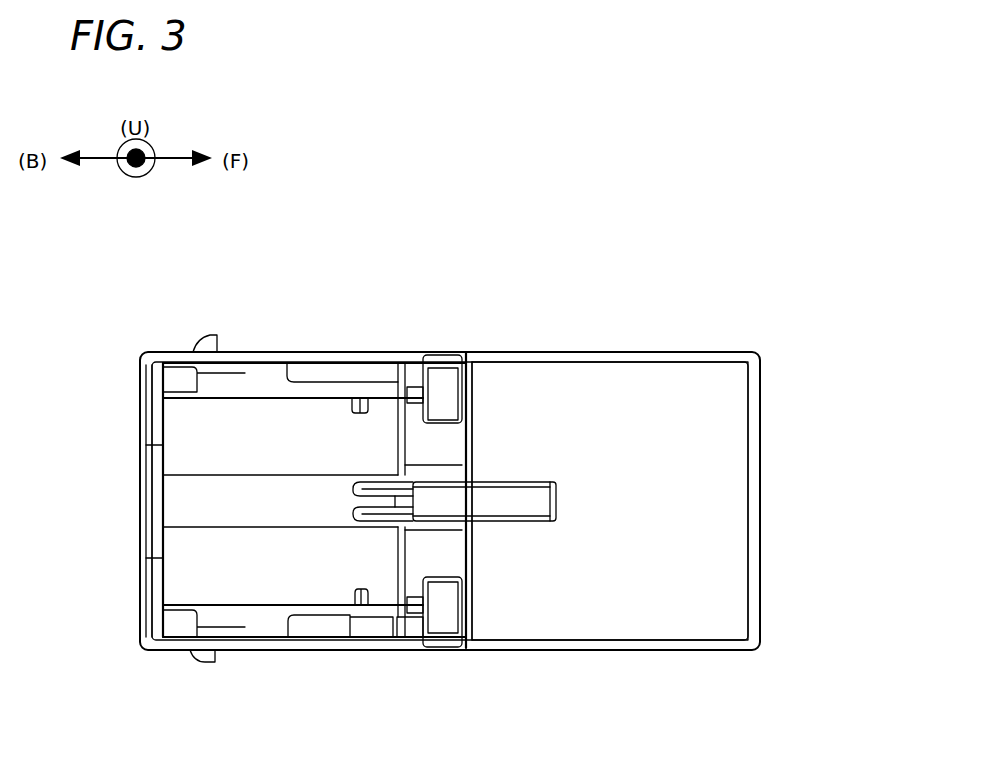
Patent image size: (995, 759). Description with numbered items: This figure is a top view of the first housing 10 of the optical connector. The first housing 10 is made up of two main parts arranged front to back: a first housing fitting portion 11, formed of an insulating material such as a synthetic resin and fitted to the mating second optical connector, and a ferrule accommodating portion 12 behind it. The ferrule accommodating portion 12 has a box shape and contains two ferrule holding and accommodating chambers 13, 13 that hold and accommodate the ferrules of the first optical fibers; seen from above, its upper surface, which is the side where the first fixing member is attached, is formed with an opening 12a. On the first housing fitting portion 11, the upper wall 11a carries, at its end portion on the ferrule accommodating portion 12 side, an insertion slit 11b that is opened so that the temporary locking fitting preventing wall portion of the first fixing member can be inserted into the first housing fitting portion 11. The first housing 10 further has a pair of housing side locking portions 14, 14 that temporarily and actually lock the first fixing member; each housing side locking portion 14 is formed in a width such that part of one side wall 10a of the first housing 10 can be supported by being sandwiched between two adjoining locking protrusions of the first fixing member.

The first housing 10 is at (412, 306).
The side wall 10a is at (365, 352).
The first housing fitting portion 11 is at (611, 453).
The upper wall 11a is at (690, 530).
The insertion slit 11b is at (550, 477).
The ferrule accommodating portion 12 is at (276, 444).
The opening 12a is at (192, 367).
The ferrule holding and accommodating chamber 13 is at (228, 432).
The housing side locking portion 14 is at (447, 353).